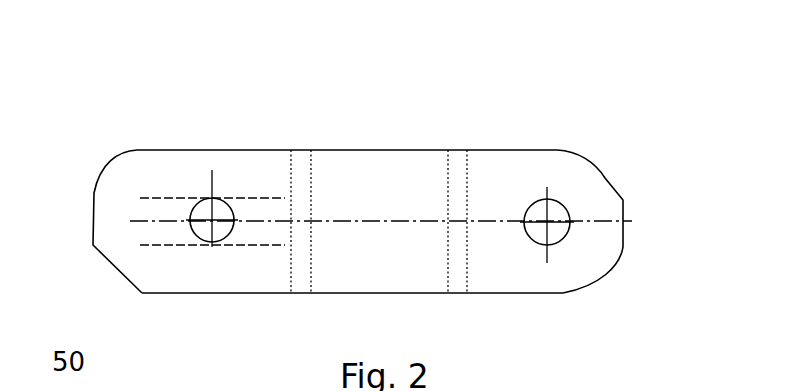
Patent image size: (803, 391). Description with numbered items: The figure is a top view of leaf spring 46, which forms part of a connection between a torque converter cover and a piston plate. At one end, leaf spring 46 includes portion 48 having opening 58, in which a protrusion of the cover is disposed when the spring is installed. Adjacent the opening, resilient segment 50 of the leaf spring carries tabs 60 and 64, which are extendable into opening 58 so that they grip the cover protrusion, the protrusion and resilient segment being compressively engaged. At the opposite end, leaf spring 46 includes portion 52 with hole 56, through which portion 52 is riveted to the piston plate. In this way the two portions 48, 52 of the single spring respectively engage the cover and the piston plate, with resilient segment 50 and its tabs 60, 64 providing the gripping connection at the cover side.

The leaf spring 46 is at (553, 98).
The portion 48 is at (127, 152).
The resilient segment 50 is at (185, 183).
The portion 52 is at (617, 148).
The hole 56 is at (570, 212).
The opening 58 is at (213, 190).
The tab 60 is at (173, 232).
The tab 64 is at (247, 230).